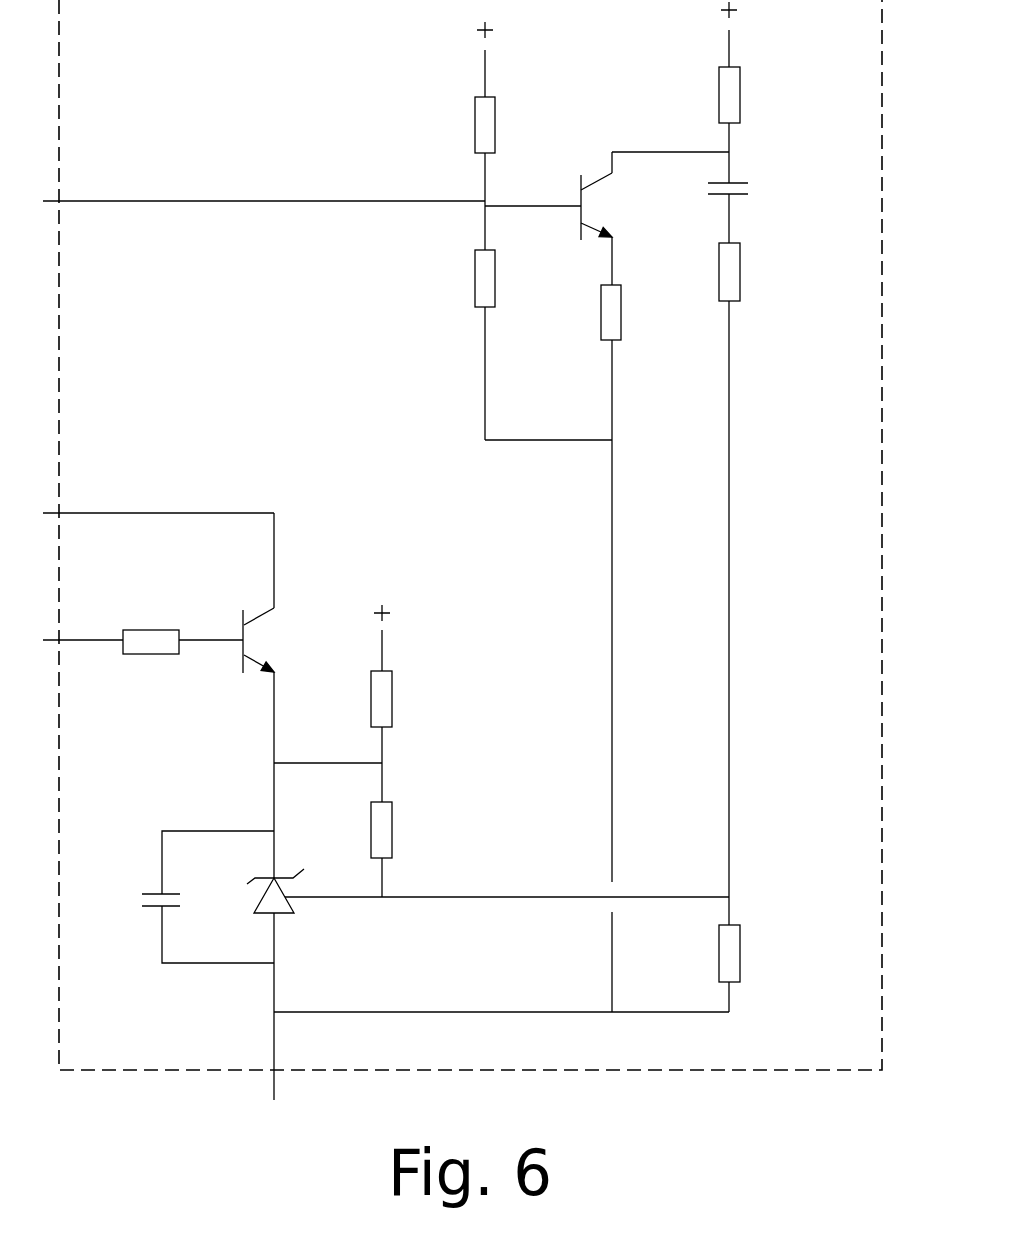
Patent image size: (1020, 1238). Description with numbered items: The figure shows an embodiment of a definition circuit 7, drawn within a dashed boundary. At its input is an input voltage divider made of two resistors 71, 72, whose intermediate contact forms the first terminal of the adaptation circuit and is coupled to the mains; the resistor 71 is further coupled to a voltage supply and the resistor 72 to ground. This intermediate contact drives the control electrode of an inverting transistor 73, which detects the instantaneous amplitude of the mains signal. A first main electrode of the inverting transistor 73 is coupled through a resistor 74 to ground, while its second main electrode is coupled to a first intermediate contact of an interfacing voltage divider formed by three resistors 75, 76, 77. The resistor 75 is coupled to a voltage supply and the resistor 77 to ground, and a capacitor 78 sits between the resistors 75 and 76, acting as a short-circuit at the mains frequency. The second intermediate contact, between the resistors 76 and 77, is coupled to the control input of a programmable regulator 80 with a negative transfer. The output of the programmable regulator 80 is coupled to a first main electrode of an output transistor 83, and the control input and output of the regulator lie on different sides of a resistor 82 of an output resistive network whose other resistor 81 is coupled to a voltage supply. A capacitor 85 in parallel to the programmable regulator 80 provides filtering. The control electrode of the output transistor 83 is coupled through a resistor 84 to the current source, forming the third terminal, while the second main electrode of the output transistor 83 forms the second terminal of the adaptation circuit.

The definition circuit 7 is at (860, 1070).
The resistor 71 is at (460, 125).
The resistor 72 is at (460, 278).
The inverting transistor 73 is at (614, 218).
The resistor 74 is at (633, 312).
The resistor 75 is at (746, 95).
The resistor 76 is at (746, 272).
The resistor 77 is at (752, 953).
The capacitor 78 is at (752, 192).
The programmable regulator 80 is at (286, 913).
The resistor 81 is at (403, 699).
The resistor 82 is at (403, 830).
The output transistor 83 is at (278, 640).
The resistor 84 is at (151, 663).
The capacitor 85 is at (182, 897).